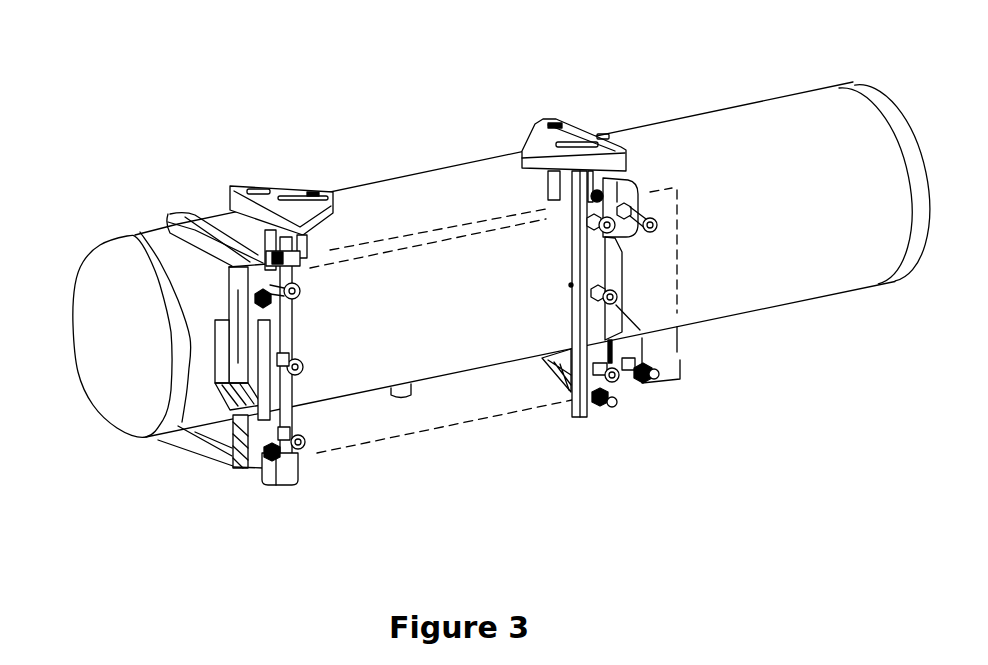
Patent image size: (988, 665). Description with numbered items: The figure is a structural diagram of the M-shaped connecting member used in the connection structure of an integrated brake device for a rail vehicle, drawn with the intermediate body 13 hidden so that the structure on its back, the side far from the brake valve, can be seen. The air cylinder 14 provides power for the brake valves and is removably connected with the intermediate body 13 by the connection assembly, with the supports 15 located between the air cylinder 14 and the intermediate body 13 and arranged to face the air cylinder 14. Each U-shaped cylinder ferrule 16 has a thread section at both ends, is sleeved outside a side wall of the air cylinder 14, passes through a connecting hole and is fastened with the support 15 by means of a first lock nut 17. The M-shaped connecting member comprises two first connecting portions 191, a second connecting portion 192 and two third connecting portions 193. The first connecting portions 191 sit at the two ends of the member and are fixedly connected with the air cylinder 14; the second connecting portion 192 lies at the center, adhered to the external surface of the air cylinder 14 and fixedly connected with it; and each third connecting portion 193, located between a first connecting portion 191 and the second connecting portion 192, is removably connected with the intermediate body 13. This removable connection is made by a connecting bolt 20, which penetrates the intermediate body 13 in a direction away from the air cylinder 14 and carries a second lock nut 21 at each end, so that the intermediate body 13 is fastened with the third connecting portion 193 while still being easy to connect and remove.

The intermediate body 13 is at (465, 423).
The air cylinder 14 is at (681, 117).
The support 15 is at (273, 483).
The U-shaped cylinder ferrule 16 is at (493, 150).
The first lock nut 17 is at (605, 387).
The first connecting portion 191 is at (190, 230).
The second connecting portion 192 is at (213, 357).
The third connecting portion 193 is at (227, 458).
The connecting bolt 20 is at (661, 381).
The second lock nut 21 is at (640, 385).